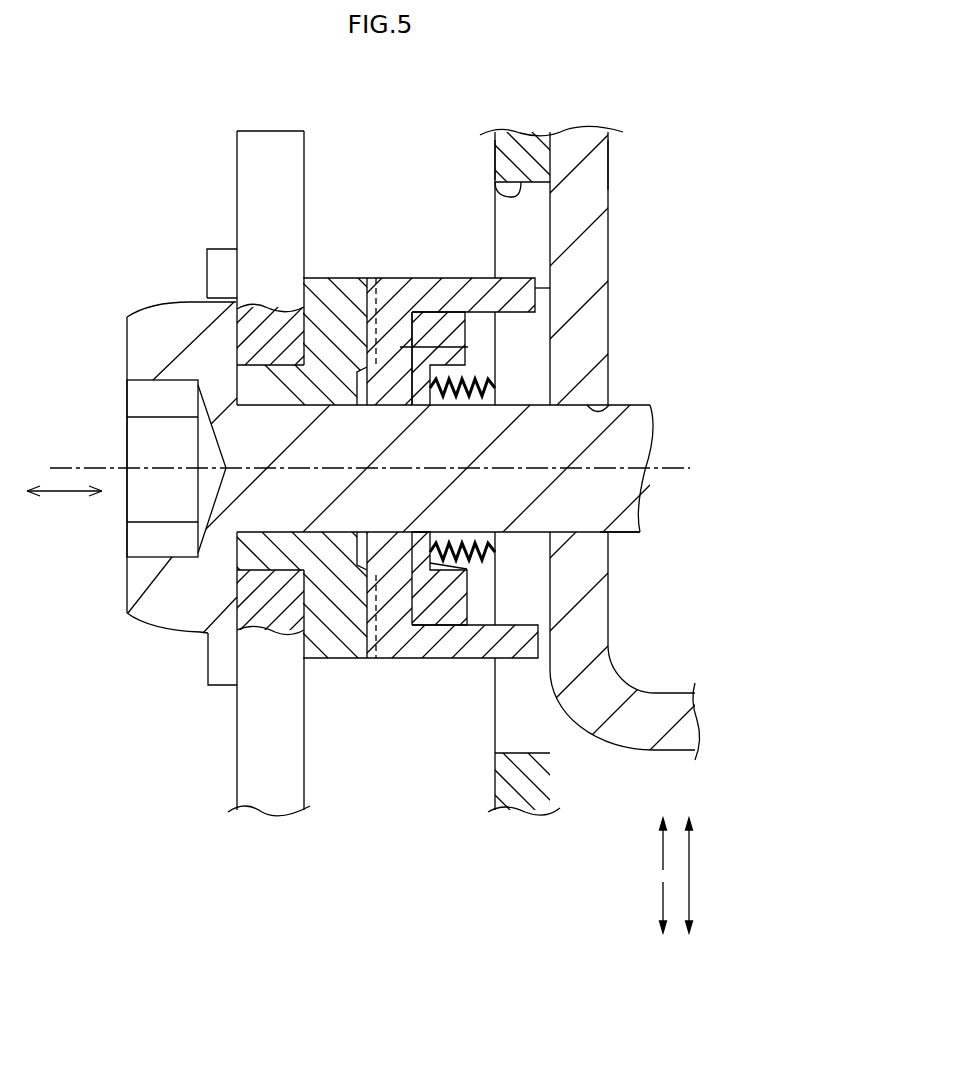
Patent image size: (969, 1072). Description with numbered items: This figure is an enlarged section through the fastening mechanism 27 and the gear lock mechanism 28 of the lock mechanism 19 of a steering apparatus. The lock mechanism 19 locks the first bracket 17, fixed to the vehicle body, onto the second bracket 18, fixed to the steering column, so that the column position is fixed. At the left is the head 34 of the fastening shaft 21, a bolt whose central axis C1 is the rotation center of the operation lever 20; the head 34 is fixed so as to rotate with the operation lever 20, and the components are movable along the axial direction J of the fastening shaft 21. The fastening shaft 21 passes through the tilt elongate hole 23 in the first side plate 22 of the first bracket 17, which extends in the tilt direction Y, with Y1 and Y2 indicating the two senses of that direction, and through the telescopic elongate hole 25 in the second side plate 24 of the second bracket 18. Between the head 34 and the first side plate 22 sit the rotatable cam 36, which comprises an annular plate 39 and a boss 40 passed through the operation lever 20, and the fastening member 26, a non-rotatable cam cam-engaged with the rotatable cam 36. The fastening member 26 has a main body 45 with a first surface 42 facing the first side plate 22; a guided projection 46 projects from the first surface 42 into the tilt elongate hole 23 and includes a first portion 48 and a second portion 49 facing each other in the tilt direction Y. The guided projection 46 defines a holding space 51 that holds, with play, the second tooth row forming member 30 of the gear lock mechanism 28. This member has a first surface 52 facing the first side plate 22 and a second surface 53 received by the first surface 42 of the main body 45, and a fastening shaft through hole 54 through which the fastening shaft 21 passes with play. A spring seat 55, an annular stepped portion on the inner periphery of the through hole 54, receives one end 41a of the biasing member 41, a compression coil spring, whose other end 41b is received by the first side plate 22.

The first bracket 17 is at (494, 158).
The second bracket 18 is at (609, 166).
The lock mechanism 19 is at (158, 631).
The operation lever 20 is at (277, 795).
The fastening shaft 21 is at (624, 533).
The first side plate 22 is at (508, 138).
The tilt elongate hole 23 is at (498, 196).
The second side plate 24 is at (578, 140).
The telescopic elongate hole 25 is at (622, 403).
The fastening member 26 is at (395, 277).
The fastening mechanism 27 is at (315, 219).
The gear lock mechanism 28 is at (476, 366).
The second tooth row forming member 30 is at (438, 627).
The head 34 is at (138, 582).
The rotatable cam 36 is at (349, 277).
The annular plate 39 is at (337, 643).
The boss 40 is at (268, 548).
The biasing member 41 is at (477, 543).
The one end of biasing member 41a is at (425, 547).
The other end of biasing member 41b is at (513, 545).
The first surface 42 is at (425, 335).
The main body 45 is at (470, 338).
The guided projection 46 is at (540, 290).
The first portion 48 is at (472, 288).
The second portion 49 is at (470, 652).
The holding space 51 is at (483, 598).
The first surface 52 is at (468, 347).
The second surface 53 is at (403, 384).
The fastening shaft through hole 54 is at (418, 530).
The spring seat 55 is at (467, 569).
The central axis C1 is at (75, 466).
The axial direction J is at (62, 496).
The tilt direction Y is at (692, 880).
The first radial direction Y1 is at (660, 853).
The second radial direction Y2 is at (660, 897).